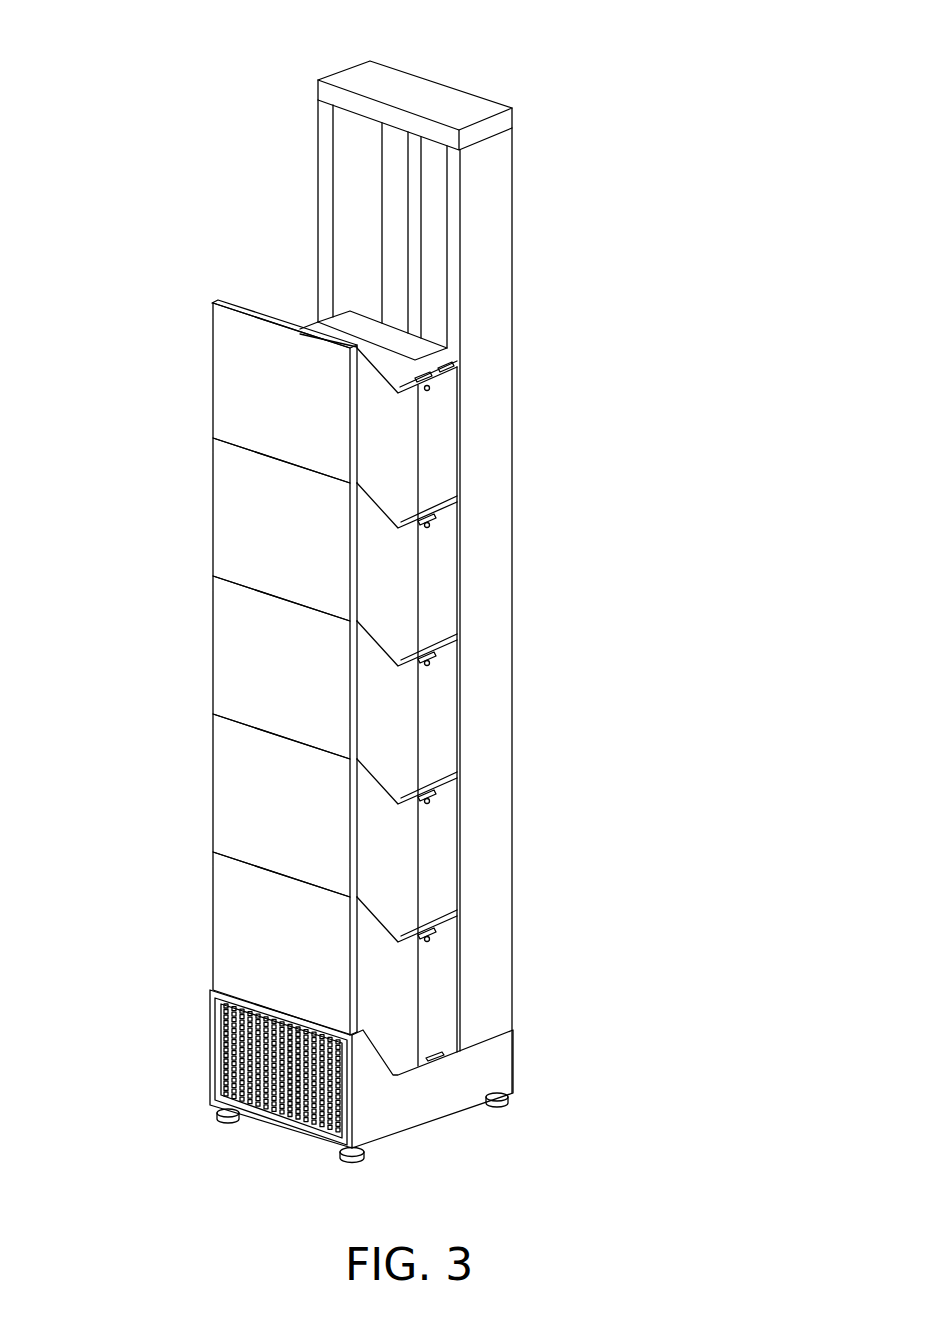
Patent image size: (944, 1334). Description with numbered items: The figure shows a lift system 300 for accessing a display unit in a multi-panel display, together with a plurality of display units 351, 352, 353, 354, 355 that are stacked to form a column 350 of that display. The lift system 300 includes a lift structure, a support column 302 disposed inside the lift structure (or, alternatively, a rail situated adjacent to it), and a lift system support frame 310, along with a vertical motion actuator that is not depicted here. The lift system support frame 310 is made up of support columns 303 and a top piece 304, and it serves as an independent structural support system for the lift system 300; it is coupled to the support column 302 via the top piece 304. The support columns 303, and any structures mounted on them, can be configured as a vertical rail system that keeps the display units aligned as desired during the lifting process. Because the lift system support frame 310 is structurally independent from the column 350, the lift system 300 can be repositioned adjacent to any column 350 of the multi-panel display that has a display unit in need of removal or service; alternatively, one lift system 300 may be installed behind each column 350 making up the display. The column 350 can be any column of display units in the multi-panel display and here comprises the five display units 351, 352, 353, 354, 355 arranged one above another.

The lift system 300 is at (492, 77).
The lift system support frame 310 is at (287, 103).
The top piece 304 is at (436, 107).
The support columns 303 is at (328, 185).
The support column 302 is at (413, 213).
The display unit 351 is at (198, 397).
The display unit 352 is at (198, 520).
The display unit 353 is at (198, 632).
The display unit 354 is at (198, 770).
The display unit 355 is at (198, 918).
The column 350 is at (275, 1143).